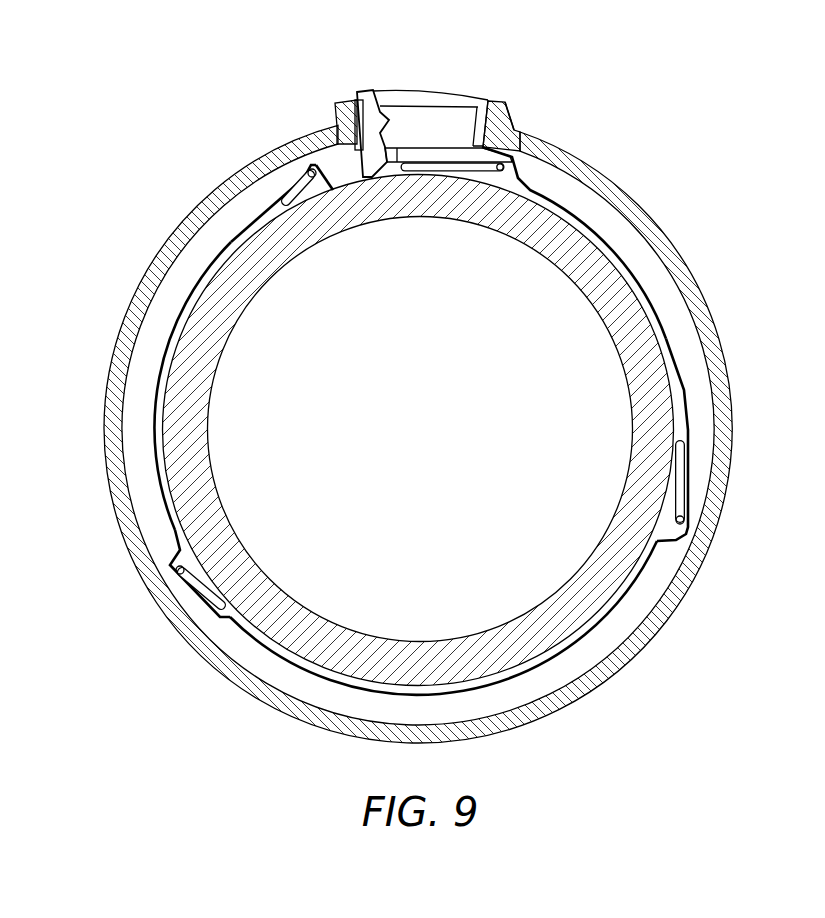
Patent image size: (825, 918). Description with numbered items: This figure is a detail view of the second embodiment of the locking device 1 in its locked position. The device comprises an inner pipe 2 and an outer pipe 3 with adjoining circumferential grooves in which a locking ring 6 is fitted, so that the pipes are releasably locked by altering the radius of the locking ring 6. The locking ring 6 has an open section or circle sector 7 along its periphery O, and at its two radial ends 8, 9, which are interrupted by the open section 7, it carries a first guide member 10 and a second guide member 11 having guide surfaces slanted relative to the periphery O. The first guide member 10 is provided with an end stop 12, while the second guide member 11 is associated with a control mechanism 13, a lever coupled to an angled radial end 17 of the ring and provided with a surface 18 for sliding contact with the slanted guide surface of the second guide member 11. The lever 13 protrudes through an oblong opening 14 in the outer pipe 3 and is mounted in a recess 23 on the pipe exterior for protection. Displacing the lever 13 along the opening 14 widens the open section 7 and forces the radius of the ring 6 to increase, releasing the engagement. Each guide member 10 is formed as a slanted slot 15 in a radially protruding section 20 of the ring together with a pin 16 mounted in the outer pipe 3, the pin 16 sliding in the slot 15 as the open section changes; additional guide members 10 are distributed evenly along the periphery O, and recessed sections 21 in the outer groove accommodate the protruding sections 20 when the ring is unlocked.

The locking device 1 is at (708, 143).
The inner pipe 2 is at (428, 642).
The outer pipe 3 is at (688, 592).
The locking ring 6 is at (610, 253).
The open section or circle sector 7 is at (307, 167).
The radial end of locking ring 8 is at (253, 223).
The radial end of locking ring 9 is at (343, 168).
The first guide member 10 is at (528, 150).
The second guide member 11 is at (440, 100).
The end stop 12 is at (507, 102).
The control mechanism 13 is at (357, 92).
The oblong opening 14 is at (425, 152).
The slanted opening or slot 15 is at (460, 172).
The pin 16 is at (676, 520).
The angled radial end 17 is at (360, 180).
The surface 18 is at (430, 128).
The radially protruding section 20 is at (503, 165).
The recessed section 21 is at (280, 190).
The recess 23 is at (516, 128).
The periphery O is at (180, 337).